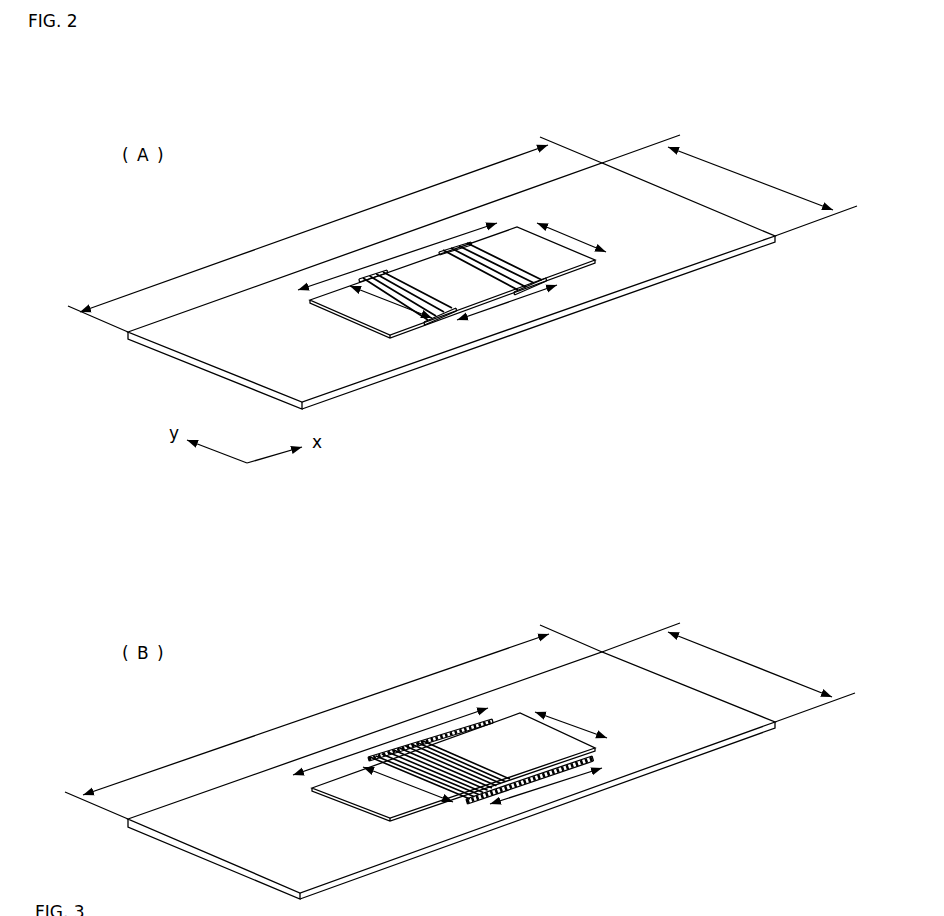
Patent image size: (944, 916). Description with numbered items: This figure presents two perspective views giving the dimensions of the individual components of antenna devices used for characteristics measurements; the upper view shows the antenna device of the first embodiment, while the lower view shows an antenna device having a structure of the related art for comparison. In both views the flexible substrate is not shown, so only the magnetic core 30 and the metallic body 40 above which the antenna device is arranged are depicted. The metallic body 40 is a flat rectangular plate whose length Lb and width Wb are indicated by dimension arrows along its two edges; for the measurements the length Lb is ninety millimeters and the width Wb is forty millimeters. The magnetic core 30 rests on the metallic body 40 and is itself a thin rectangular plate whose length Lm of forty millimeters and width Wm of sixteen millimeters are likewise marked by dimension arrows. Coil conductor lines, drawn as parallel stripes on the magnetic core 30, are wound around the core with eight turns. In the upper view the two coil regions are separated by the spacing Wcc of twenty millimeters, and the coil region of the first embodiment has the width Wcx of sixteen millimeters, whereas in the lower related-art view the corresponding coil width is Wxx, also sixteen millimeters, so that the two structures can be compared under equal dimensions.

The magnetic core 30 is at (567, 260).
The metallic body 40 is at (353, 370).
The length of the metallic body Lb is at (333, 478).
The width of the metallic body Wb is at (729, 428).
The length of the magnetic core Lm is at (395, 499).
The width of the magnetic core Wm is at (571, 477).
The coil-to-coil spacing dimension Wcc is at (401, 544).
The coil width dimension of the first embodiment Wcx is at (507, 303).
The coil width dimension of the related-art structure Wxx is at (546, 786).